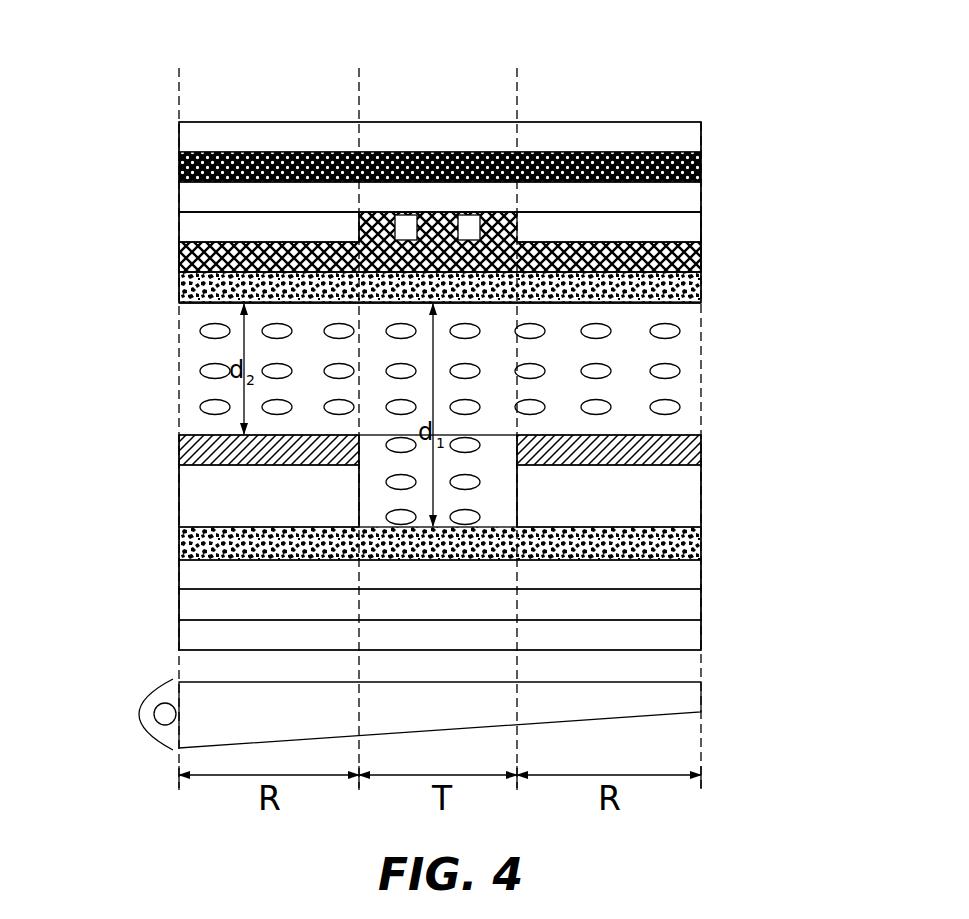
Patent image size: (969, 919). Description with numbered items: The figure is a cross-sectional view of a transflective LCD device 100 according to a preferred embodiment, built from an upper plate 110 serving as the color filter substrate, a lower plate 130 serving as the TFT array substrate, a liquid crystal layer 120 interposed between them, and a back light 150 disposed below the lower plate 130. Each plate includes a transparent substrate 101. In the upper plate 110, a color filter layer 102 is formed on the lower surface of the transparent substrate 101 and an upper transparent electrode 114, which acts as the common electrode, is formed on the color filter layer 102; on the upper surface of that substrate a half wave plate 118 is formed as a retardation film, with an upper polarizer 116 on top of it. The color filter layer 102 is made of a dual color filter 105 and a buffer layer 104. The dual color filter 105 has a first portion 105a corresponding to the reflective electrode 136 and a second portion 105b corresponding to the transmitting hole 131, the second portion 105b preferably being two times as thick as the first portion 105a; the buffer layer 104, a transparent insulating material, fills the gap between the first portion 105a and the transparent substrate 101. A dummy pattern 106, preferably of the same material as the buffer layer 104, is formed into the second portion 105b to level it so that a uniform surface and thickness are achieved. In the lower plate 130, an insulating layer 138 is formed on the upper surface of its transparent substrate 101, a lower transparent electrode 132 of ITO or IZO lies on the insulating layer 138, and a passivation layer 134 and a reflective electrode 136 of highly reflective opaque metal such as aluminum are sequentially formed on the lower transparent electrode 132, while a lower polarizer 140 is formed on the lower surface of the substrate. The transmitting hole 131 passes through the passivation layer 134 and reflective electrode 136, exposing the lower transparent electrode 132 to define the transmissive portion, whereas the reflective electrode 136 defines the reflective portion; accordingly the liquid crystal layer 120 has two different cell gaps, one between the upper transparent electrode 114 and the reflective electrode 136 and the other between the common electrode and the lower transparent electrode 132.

The transflective LCD device 100 is at (724, 71).
The first portion of the dual color filter 105a is at (359, 95).
The second portion of the dual color filter 105b is at (517, 95).
The upper polarizer 116 is at (690, 136).
The half wave plate 118 is at (700, 173).
The transparent substrate 101 is at (693, 202).
The color filter layer 102 is at (703, 212).
The buffer layer 104 is at (195, 233).
The dual color filter 105 is at (612, 247).
The dummy pattern 106 is at (472, 223).
The upper transparent electrode 114 is at (700, 297).
The upper plate 110 is at (163, 122).
The liquid crystal layer 120 is at (163, 303).
The transmitting hole 131 is at (492, 518).
The reflective electrode 136 is at (690, 456).
The passivation layer 134 is at (685, 517).
The lower transparent electrode 132 is at (700, 548).
The insulating layer 138 is at (690, 585).
The lower polarizer 140 is at (690, 640).
The lower plate 130 is at (163, 436).
The back light 150 is at (690, 710).